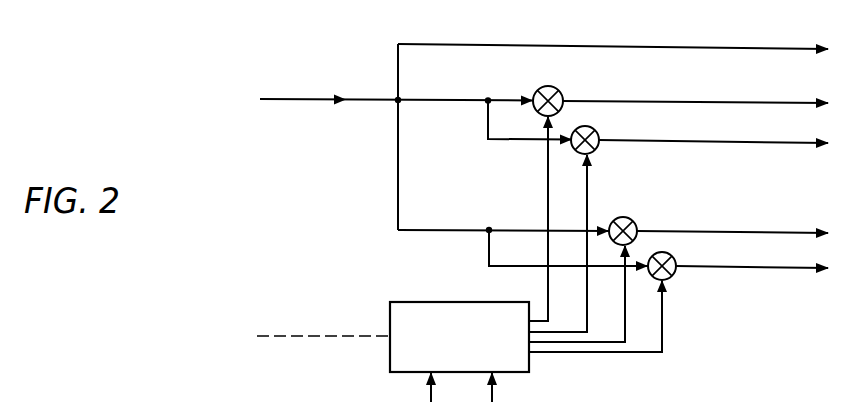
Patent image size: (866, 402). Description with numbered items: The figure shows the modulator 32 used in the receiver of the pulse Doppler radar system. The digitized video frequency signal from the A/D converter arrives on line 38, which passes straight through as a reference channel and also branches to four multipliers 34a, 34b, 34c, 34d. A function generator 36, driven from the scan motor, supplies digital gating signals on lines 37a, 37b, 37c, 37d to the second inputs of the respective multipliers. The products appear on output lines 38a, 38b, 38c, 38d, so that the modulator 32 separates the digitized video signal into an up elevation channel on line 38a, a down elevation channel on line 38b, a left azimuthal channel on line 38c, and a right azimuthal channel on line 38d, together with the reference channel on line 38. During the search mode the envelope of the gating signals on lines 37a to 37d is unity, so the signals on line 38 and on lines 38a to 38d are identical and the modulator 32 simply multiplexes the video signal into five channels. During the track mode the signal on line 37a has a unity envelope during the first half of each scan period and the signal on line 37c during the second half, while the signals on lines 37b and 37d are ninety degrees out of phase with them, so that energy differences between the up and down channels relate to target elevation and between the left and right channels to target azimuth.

The modulator 32 is at (288, 199).
The multiplier 34a is at (562, 93).
The multiplier 34b is at (598, 133).
The multiplier 34c is at (634, 221).
The multiplier 34d is at (672, 258).
The function generator 36 is at (458, 301).
The line 37a is at (546, 165).
The line 37b is at (589, 197).
The line 37c is at (626, 331).
The line 37d is at (663, 307).
The line 38 is at (304, 97).
The line 38a is at (792, 101).
The line 38b is at (788, 142).
The line 38c is at (800, 232).
The line 38d is at (800, 266).